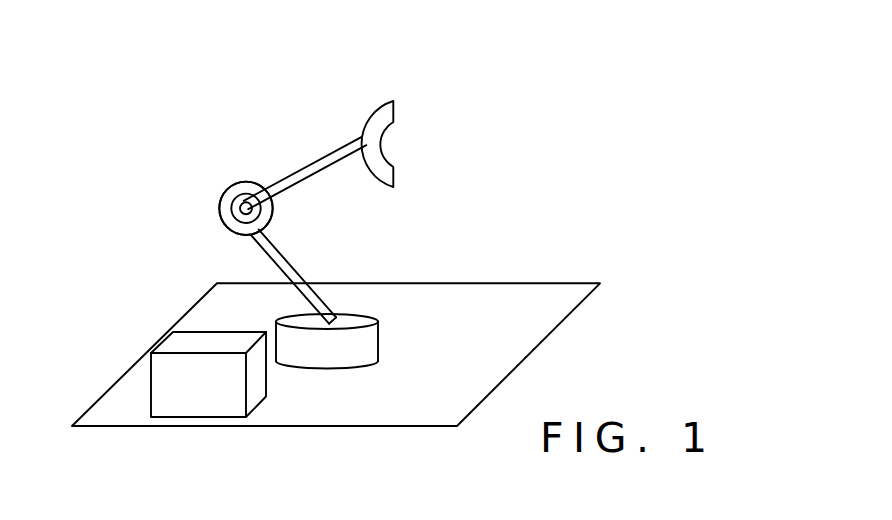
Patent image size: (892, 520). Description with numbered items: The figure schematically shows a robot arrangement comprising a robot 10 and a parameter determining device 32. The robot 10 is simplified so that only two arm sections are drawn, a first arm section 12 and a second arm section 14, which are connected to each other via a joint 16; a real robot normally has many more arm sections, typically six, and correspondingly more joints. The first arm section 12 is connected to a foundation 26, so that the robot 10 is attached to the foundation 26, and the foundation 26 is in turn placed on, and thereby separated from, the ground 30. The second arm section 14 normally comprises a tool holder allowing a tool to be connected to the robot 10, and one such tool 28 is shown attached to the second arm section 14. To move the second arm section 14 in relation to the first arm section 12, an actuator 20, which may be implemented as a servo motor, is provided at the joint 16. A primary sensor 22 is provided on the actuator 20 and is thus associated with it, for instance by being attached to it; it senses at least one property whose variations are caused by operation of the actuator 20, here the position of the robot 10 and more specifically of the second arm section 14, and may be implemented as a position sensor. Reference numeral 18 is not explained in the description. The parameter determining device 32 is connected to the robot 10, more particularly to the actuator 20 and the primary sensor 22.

The robot 10 is at (170, 243).
The first arm section 12 is at (283, 257).
The second arm section 14 is at (315, 162).
The joint 16 is at (230, 185).
The bearing ring 18 is at (222, 219).
The actuator 20 is at (258, 221).
The primary sensor 22 is at (243, 204).
The foundation 26 is at (380, 344).
The tool 28 is at (394, 107).
The ground 30 is at (565, 313).
The parameter determining device 32 is at (266, 387).